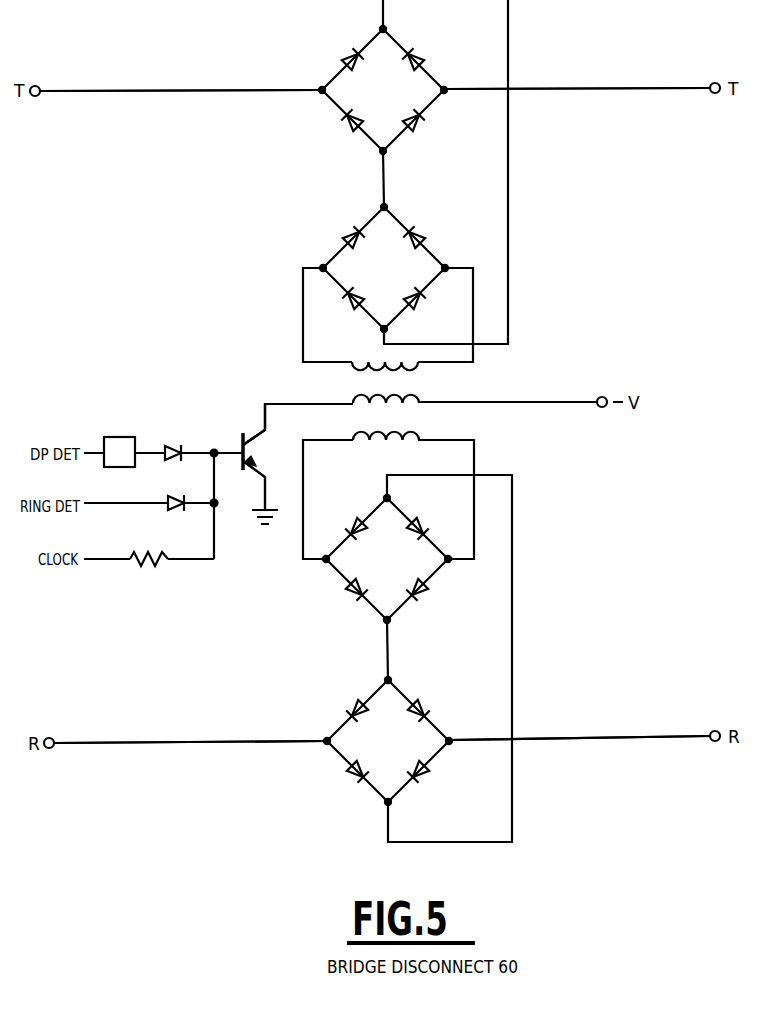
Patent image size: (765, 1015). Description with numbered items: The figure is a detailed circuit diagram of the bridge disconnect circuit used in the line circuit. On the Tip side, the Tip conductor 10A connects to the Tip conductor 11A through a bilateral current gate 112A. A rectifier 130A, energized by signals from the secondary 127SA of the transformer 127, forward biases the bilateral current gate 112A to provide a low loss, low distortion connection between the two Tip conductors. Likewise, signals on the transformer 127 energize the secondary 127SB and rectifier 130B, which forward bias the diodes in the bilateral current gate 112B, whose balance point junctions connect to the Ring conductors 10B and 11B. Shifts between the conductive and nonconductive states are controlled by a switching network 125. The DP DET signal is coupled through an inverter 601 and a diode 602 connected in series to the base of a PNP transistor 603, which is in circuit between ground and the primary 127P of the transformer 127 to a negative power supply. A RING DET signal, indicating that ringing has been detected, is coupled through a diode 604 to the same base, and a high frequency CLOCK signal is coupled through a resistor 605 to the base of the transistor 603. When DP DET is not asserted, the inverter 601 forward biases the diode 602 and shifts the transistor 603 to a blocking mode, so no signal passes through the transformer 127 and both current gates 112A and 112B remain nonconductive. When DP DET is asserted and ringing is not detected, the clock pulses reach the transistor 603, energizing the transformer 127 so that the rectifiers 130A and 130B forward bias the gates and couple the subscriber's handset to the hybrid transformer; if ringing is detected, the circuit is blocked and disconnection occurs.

The Tip conductor 10A is at (165, 90).
The Tip conductor 11A is at (645, 88).
The Ring conductor 10B is at (246, 744).
The Ring conductor 11B is at (653, 738).
The bilateral current gate 112A is at (383, 90).
The bilateral current gate 112B is at (388, 741).
The rectifier 130A is at (388, 283).
The rectifier 130B is at (388, 532).
The transformer 127 is at (411, 422).
The primary 127P is at (437, 394).
The secondary 127SA is at (352, 371).
The secondary 127SB is at (378, 442).
The switching network 125 is at (228, 426).
The inverter 601 is at (115, 437).
The diode 602 is at (168, 444).
The PNP transistor 603 is at (266, 440).
The diode 604 is at (166, 510).
The resistor 605 is at (152, 566).